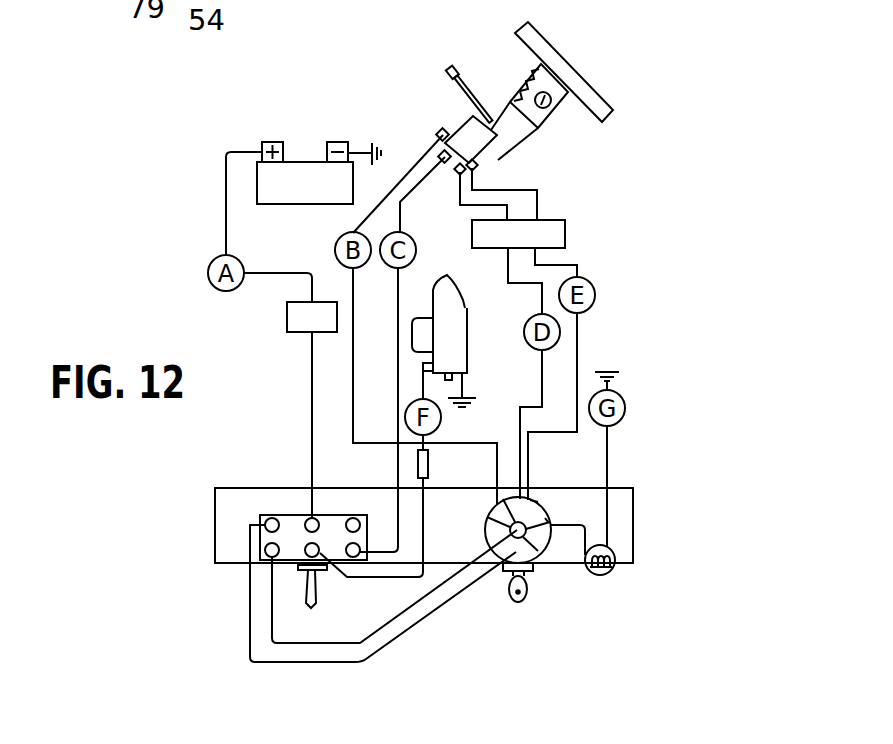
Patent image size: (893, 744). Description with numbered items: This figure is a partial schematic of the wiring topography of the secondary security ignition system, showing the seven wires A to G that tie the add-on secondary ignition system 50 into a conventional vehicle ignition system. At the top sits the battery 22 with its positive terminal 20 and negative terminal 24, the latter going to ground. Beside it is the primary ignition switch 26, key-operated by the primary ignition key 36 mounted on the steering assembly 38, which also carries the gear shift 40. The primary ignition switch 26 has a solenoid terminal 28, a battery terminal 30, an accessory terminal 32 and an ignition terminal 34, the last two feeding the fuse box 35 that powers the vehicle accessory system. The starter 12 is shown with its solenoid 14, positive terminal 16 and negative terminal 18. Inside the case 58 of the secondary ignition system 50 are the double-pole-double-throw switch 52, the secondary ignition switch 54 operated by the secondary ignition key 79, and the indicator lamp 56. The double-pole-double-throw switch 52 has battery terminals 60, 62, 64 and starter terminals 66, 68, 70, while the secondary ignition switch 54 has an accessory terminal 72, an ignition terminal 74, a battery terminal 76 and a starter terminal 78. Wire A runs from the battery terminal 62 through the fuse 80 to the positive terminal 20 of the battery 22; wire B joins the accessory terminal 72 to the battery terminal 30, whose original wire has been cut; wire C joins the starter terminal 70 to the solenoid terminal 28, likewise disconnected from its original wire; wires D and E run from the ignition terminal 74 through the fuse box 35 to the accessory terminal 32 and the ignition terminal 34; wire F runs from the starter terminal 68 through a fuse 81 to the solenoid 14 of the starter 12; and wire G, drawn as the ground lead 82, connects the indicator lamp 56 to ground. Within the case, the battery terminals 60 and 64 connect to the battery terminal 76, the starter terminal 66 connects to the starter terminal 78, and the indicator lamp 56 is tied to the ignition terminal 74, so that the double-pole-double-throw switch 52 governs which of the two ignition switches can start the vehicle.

The starter 12 is at (467, 340).
The solenoid 14 is at (412, 337).
The positive terminal 16 is at (423, 368).
The negative terminal 18 is at (463, 385).
The positive terminal 20 is at (270, 140).
The battery 22 is at (305, 204).
The negative terminal 24 is at (333, 140).
The primary ignition switch 26 is at (492, 125).
The solenoid terminal 28 is at (440, 135).
The battery terminal 30 is at (458, 120).
The accessory terminal 32 is at (445, 161).
The ignition terminal 34 is at (477, 165).
The fuse box 35 is at (566, 233).
The primary ignition key 36 is at (552, 107).
The steering assembly 38 is at (540, 34).
The gear shift 40 is at (472, 95).
The secondary ignition system 50 is at (422, 499).
The double-pole-double-throw switch 52 is at (281, 527).
The secondary ignition switch 54 is at (523, 614).
The indicator lamp 56 is at (605, 575).
The case 58 is at (633, 517).
The battery terminal 60 is at (268, 519).
The battery terminal 62 is at (290, 515).
The battery terminal 64 is at (367, 512).
The starter terminal 66 is at (265, 548).
The starter terminal 68 is at (292, 575).
The starter terminal 70 is at (336, 560).
The accessory terminal 72 is at (485, 523).
The ignition terminal 74 is at (538, 500).
The battery terminal 76 is at (535, 569).
The starter terminal 78 is at (543, 520).
The secondary ignition key 79 is at (508, 585).
The fuse 80 is at (287, 319).
The fuse 81 is at (428, 465).
The ground lead 82 is at (608, 445).